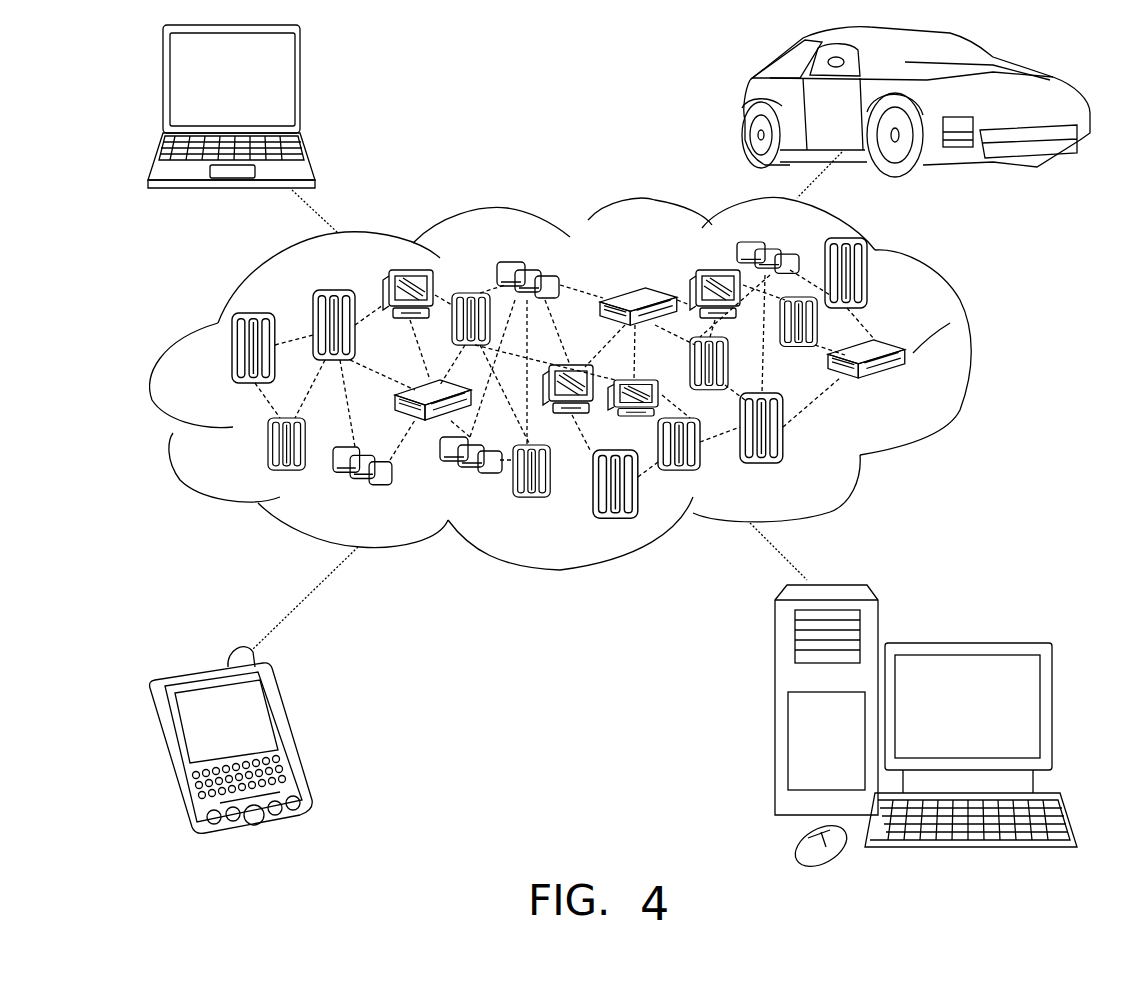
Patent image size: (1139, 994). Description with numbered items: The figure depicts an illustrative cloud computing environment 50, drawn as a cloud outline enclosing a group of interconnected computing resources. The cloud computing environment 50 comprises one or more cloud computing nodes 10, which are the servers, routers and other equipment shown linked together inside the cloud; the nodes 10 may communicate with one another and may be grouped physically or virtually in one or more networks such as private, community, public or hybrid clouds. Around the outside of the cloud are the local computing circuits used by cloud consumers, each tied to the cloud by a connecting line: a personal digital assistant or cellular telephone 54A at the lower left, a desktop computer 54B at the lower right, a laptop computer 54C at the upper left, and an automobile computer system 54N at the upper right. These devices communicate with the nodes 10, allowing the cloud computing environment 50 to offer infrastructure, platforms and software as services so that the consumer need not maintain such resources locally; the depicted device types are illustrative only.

The cloud computing node 10 is at (912, 390).
The cloud computing environment 50 is at (968, 358).
The personal digital assistant (PDA) or cellular telephone 54A is at (293, 737).
The desktop computer 54B is at (965, 642).
The laptop computer 54C is at (315, 88).
The automobile computer system 54N is at (745, 101).